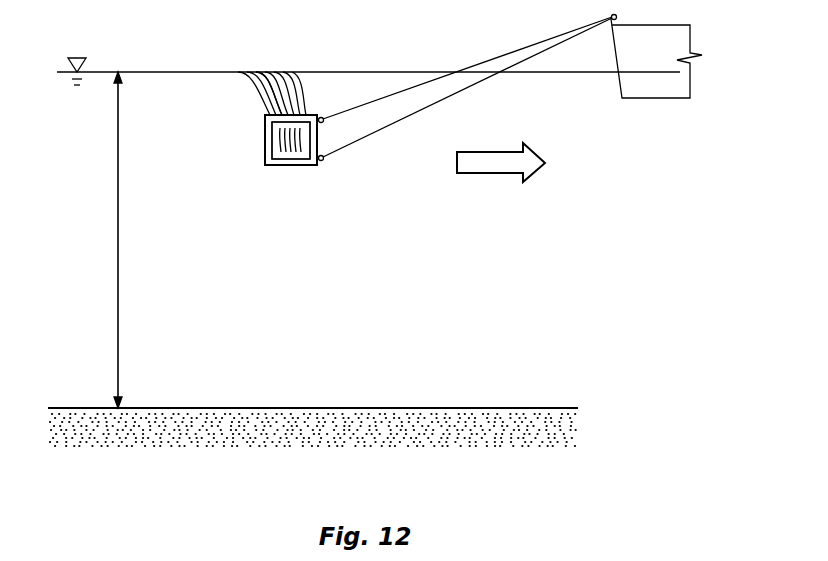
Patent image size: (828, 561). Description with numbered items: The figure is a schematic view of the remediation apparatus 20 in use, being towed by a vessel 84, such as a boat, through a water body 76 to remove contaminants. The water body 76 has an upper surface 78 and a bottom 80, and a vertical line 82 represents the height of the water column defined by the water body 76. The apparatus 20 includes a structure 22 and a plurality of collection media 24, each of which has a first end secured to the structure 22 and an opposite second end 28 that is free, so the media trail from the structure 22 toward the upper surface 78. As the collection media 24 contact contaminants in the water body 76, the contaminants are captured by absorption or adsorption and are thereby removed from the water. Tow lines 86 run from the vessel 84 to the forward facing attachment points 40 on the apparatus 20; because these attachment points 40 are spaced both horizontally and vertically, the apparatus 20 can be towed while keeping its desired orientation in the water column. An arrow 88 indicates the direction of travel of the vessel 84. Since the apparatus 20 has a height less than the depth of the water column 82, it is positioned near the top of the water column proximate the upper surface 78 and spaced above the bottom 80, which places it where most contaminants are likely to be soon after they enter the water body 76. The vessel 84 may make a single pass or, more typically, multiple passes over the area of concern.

The remediation apparatus 20 is at (256, 150).
The structure 22 is at (290, 160).
The collection media 24 is at (262, 98).
The second end 28 is at (279, 80).
The attachment points 40 is at (324, 122).
The water body 76 is at (473, 380).
The upper surface 78 is at (185, 72).
The bottom 80 is at (315, 406).
The line representing water column height 82 is at (121, 255).
The vessel 84 is at (640, 100).
The tow lines 86 is at (415, 87).
The arrow indicating direction of travel 88 is at (495, 173).